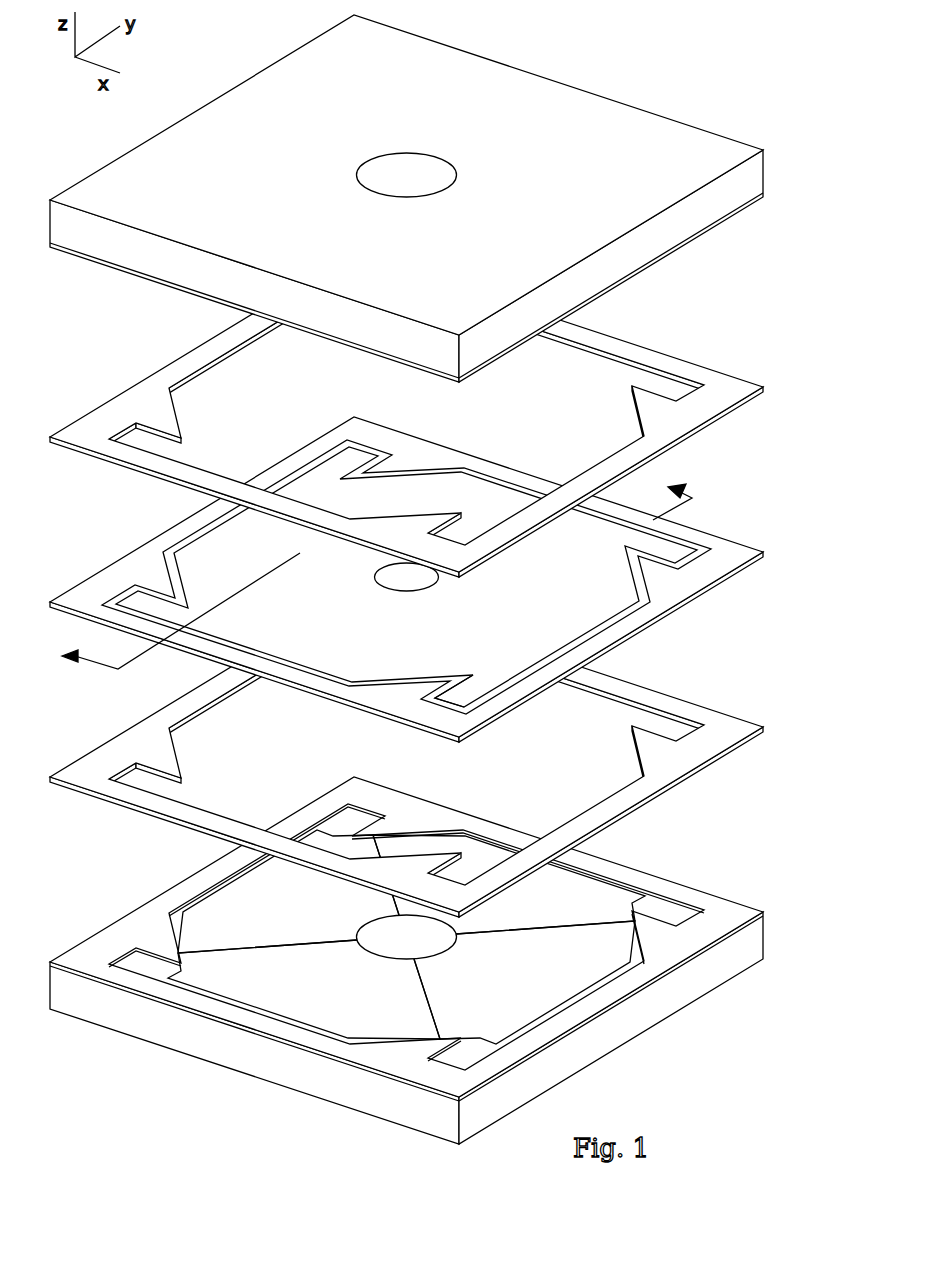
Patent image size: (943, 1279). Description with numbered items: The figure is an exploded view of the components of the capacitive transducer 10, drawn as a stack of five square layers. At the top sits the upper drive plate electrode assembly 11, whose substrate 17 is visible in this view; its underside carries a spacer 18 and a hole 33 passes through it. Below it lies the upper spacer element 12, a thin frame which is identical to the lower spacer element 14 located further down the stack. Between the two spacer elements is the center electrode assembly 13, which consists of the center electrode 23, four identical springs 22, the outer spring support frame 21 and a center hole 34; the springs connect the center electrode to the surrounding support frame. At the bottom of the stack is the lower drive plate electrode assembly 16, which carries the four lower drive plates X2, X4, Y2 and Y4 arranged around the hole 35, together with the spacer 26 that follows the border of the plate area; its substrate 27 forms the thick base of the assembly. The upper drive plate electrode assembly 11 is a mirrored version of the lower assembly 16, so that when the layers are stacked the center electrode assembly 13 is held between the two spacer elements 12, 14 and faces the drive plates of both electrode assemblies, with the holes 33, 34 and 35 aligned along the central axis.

The transducer 10 is at (447, 574).
The upper drive plate electrode assembly 11 is at (451, 228).
The upper spacer element 12 is at (707, 428).
The center electrode assembly 13 is at (450, 567).
The lower spacer element 14 is at (718, 770).
The lower drive plate electrode assembly 16 is at (445, 960).
The substrate 17 is at (528, 320).
The spacer 18 is at (588, 314).
The outer spring support frame 21 is at (400, 690).
The springs 22 is at (483, 680).
The center electrode 23 is at (310, 562).
The spacer 26 is at (245, 910).
The substrate 27 is at (288, 1073).
The hole 33 is at (406, 182).
The center hole 34 is at (383, 577).
The hole 35 is at (407, 940).
The lower drive plate X2 is at (200, 903).
The lower drive plate Y2 is at (280, 995).
The lower drive plate X4 is at (525, 988).
The lower drive plate Y4 is at (552, 902).